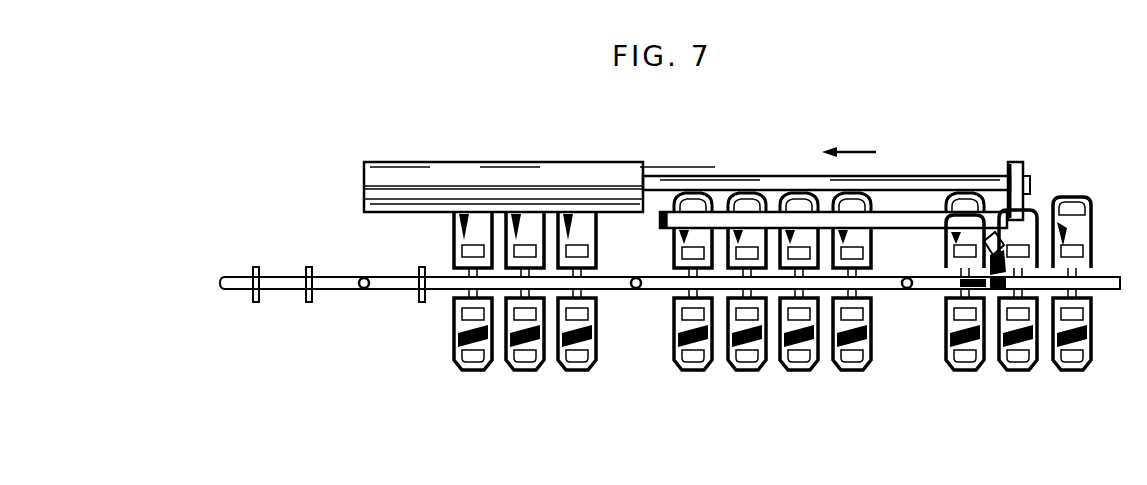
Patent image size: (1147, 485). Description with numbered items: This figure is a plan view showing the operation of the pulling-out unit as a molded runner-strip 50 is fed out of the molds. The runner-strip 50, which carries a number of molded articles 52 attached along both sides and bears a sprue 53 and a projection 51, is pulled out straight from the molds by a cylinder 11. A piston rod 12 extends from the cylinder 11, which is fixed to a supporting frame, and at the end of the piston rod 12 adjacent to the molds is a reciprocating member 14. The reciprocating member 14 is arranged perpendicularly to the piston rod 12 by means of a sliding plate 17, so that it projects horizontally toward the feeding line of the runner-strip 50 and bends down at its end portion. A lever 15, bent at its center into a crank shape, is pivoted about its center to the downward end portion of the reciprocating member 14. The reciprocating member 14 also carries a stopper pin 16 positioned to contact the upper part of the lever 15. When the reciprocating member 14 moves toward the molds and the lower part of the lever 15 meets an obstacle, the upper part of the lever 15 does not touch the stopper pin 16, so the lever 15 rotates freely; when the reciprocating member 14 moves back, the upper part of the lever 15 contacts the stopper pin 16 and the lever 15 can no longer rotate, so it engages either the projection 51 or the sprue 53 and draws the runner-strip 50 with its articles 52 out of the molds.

The cylinder 11 is at (420, 176).
The piston rod 12 is at (692, 188).
The reciprocating member 14 is at (1000, 228).
The lever 15 is at (1000, 290).
The stopper pin 16 is at (953, 246).
The sliding plate 17 is at (775, 212).
The runner-strip 50 is at (283, 283).
The projection 51 is at (973, 286).
The articles 52 is at (577, 370).
The sprue 53 is at (366, 290).